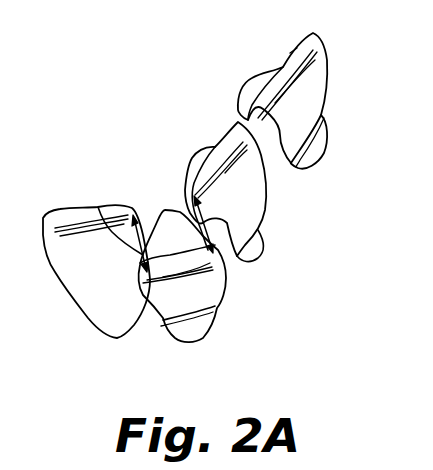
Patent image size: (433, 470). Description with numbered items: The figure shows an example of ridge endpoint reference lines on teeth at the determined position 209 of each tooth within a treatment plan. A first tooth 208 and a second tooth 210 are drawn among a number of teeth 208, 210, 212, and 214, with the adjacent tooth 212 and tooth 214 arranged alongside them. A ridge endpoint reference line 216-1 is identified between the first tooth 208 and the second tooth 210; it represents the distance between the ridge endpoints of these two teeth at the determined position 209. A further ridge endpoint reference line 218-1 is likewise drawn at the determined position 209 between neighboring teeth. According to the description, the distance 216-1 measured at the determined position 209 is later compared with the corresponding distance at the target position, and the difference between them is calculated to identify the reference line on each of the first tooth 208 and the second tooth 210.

The determined position 209 is at (118, 72).
The first tooth 208 is at (84, 323).
The second tooth 210 is at (148, 313).
The tooth 212 is at (268, 211).
The tooth 214 is at (325, 85).
The ridge endpoint reference line 216-1 is at (108, 226).
The ridge endpoint reference line 218-1 is at (243, 248).